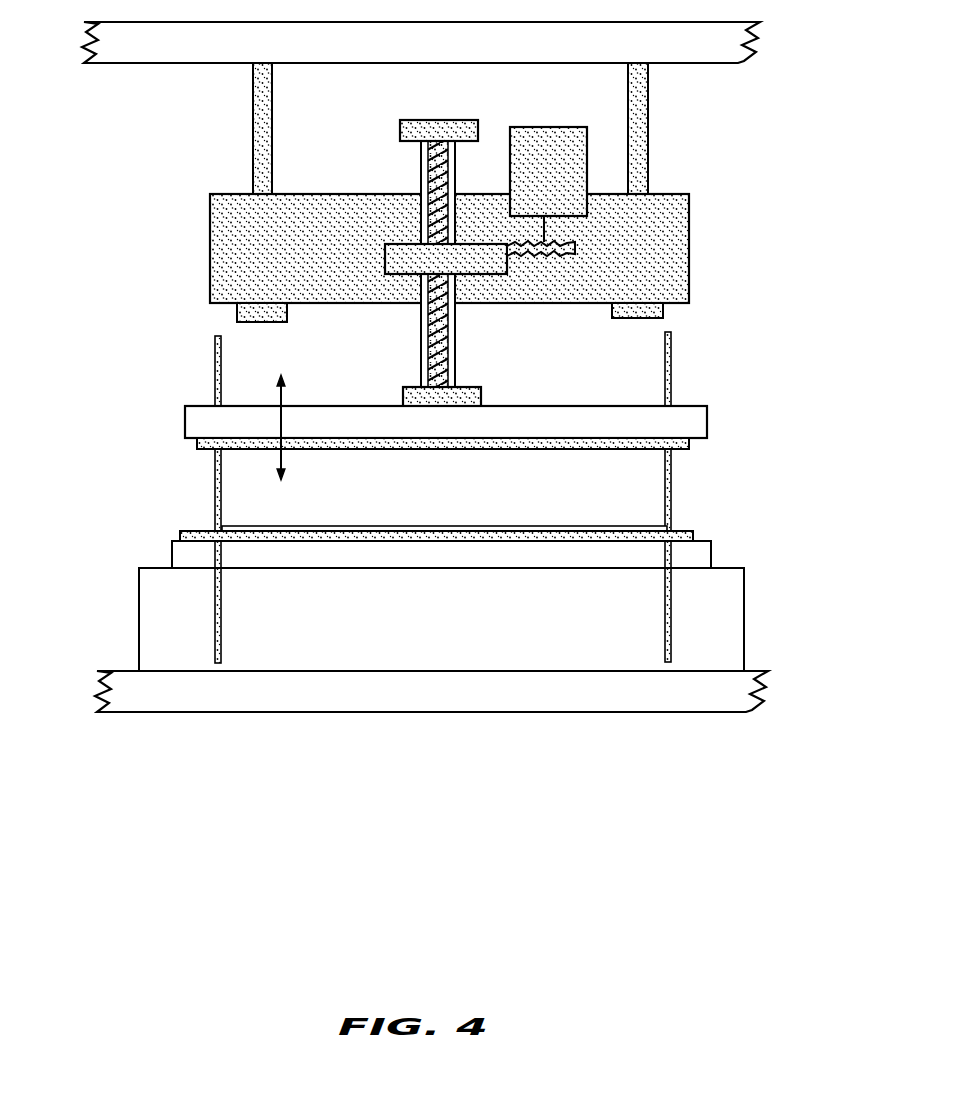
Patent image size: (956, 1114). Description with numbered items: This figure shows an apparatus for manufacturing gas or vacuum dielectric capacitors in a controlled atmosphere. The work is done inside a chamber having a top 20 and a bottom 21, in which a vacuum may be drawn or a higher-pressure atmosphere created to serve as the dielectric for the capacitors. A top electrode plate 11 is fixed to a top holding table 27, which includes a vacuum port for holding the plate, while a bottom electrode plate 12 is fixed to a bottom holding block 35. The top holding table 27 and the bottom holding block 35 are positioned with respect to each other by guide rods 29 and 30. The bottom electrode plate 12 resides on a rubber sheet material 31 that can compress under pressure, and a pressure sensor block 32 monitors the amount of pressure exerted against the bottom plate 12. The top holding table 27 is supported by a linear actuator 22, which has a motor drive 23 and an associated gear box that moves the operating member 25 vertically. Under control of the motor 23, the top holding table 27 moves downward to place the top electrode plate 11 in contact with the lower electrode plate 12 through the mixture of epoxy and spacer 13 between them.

The top electrode plate 11 is at (240, 458).
The bottom electrode plate 12 is at (676, 527).
The mixture of epoxy and spacer 13 is at (383, 522).
The chamber top 20 is at (728, 46).
The chamber bottom 21 is at (185, 706).
The linear actuator 22 is at (412, 269).
The motor drive 23 is at (548, 155).
The operating member 25 is at (465, 328).
The top holding table 27 is at (693, 423).
The guide rod 29 is at (671, 352).
The guide rod 30 is at (213, 353).
The rubber sheet material 31 is at (175, 538).
The pressure sensor block 32 is at (696, 552).
The bottom holding block 35 is at (172, 627).